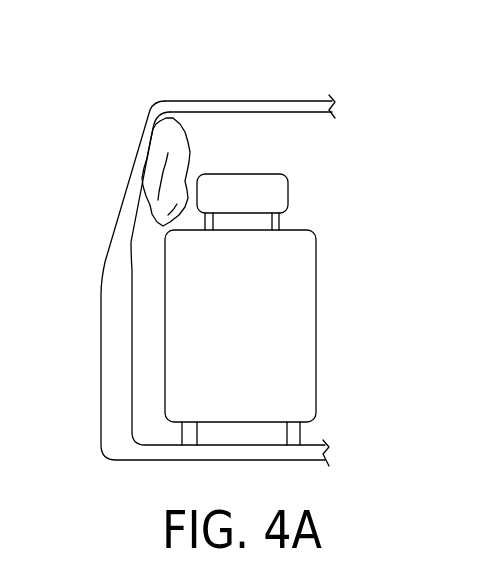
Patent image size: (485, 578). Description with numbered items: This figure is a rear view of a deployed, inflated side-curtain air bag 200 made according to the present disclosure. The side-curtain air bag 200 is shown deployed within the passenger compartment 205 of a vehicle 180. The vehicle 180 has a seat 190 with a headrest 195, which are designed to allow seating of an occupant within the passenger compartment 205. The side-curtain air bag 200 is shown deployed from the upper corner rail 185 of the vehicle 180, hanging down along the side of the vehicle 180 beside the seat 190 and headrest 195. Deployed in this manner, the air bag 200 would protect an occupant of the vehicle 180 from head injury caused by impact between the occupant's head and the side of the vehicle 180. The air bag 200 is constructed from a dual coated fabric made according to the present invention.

The vehicle 180 is at (117, 312).
The upper corner rail 185 is at (160, 112).
The seat 190 is at (280, 338).
The headrest 195 is at (275, 201).
The side-curtain air bag 200 is at (202, 146).
The passenger compartment 205 is at (338, 183).